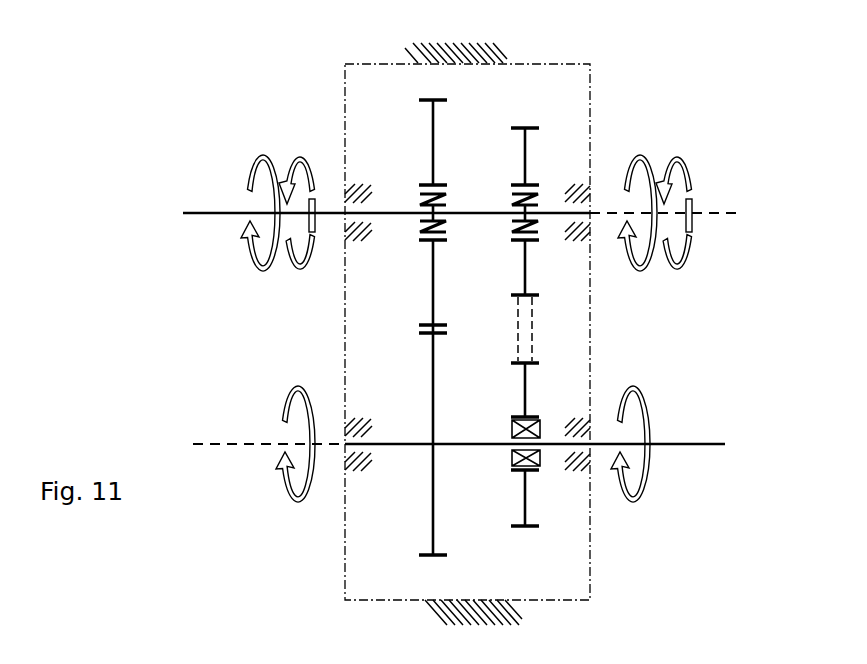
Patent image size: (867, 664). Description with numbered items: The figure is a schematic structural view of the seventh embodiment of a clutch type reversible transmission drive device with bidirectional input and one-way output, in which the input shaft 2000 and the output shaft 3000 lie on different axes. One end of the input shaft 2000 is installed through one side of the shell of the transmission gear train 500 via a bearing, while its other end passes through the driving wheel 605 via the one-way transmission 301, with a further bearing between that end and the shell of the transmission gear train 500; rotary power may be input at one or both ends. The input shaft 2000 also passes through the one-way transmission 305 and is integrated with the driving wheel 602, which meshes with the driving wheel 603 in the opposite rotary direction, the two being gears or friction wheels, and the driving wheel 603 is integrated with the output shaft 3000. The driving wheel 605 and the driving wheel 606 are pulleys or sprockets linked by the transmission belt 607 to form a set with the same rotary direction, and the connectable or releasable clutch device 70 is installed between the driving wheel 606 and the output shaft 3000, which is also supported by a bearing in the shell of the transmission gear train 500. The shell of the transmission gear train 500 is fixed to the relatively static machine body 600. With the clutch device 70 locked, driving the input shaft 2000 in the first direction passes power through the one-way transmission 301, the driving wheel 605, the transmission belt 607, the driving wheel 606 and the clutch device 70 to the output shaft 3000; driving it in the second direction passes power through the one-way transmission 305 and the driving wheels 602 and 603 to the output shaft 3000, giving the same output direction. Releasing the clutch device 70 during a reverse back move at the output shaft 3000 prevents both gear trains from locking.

The shell of the transmission gear train 500 is at (345, 128).
The machine body 600 is at (473, 53).
The driving wheel 602 is at (430, 132).
The driving wheel 603 is at (430, 493).
The driving wheel 605 is at (530, 128).
The driving wheel 606 is at (525, 508).
The transmission belt 607 is at (518, 333).
The one-way transmission 305 is at (440, 195).
The one-way transmission 301 is at (540, 195).
The connectable or releasable clutch device 70 is at (512, 425).
The input shaft 2000 is at (233, 213).
The output shaft 3000 is at (258, 443).